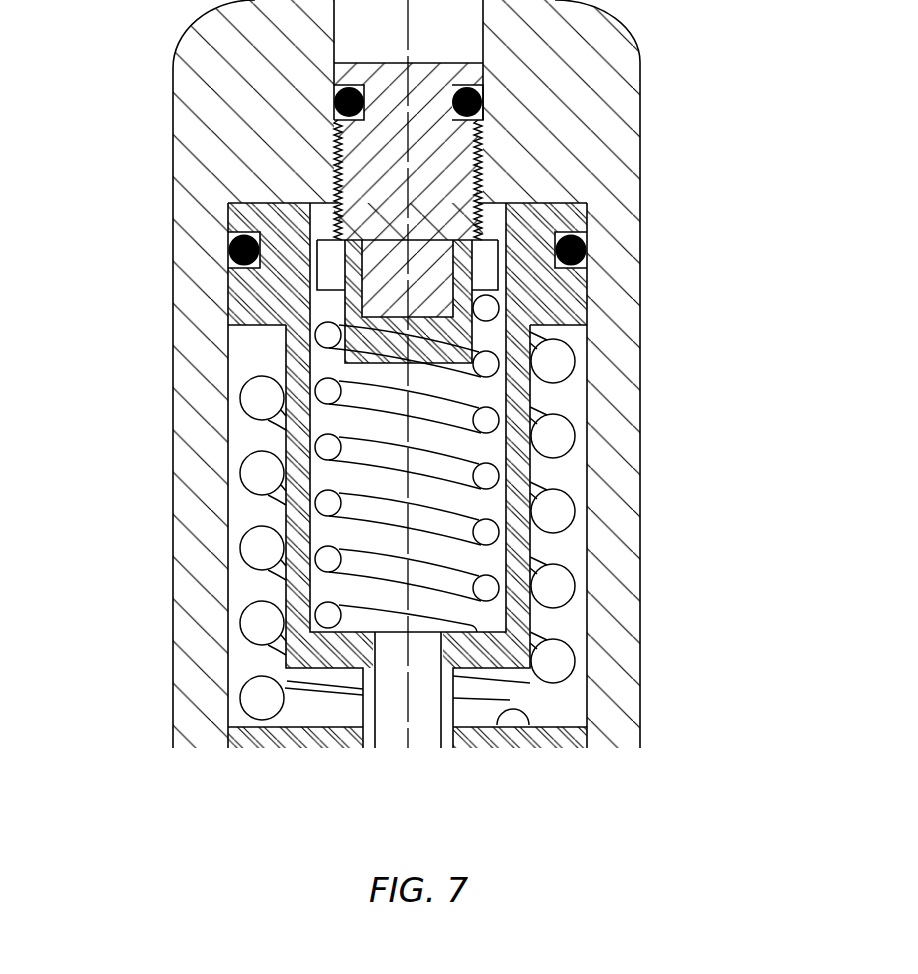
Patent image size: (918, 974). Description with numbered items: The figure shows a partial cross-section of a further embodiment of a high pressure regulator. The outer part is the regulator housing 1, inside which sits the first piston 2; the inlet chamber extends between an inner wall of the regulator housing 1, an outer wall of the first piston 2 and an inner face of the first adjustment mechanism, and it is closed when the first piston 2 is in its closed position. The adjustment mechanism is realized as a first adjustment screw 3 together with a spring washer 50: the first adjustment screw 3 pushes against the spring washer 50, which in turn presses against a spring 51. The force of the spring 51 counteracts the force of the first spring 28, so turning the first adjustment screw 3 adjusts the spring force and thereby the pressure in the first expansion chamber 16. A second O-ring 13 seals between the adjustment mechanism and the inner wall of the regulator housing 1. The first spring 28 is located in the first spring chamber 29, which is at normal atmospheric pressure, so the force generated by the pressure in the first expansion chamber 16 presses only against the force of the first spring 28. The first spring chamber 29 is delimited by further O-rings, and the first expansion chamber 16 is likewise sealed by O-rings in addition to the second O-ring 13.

The regulator housing 1 is at (195, 213).
The first piston 2 is at (253, 298).
The first adjustment screw 3 is at (445, 157).
The second O-ring 13 is at (589, 243).
The first expansion chamber 16 is at (323, 218).
The first spring 28 is at (257, 400).
The first spring chamber 29 is at (242, 437).
The spring washer 50 is at (440, 334).
The spring 51 is at (487, 421).